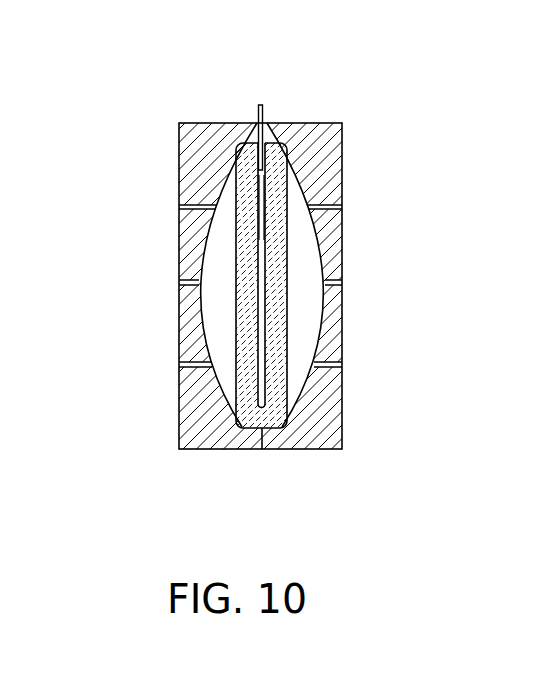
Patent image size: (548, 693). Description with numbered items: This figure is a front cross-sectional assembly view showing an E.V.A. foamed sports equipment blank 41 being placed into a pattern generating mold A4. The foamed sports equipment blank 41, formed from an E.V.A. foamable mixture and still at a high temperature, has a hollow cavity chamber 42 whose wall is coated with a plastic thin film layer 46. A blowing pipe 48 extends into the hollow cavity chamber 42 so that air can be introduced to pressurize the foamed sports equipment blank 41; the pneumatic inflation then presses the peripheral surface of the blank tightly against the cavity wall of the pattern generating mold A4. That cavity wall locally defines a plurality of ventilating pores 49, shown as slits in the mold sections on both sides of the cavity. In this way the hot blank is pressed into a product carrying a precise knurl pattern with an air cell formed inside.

The foamed sports equipment blank 41 is at (275, 317).
The hollow cavity chamber 42 is at (258, 274).
The plastic thin film layer 46 is at (258, 232).
The blowing pipe 48 is at (265, 112).
The ventilating pores 49 is at (192, 208).
The pattern generating mold A4 is at (197, 386).